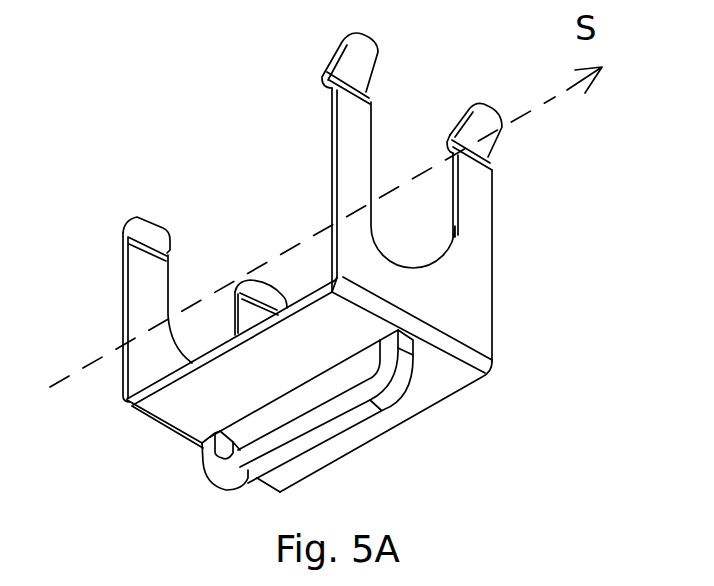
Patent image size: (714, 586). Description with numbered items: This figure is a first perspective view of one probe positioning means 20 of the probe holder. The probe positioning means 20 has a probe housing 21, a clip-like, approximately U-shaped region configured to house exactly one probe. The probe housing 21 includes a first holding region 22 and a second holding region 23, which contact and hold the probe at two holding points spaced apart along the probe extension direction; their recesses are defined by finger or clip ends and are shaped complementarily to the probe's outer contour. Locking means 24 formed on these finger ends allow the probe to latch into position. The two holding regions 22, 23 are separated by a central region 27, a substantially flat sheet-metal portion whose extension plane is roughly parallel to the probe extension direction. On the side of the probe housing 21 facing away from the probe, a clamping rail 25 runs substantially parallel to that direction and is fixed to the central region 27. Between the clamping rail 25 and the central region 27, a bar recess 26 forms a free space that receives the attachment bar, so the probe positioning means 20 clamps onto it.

The probe positioning means 20 is at (647, 254).
The probe housing 21 is at (482, 327).
The first holding region 22 is at (477, 210).
The second holding region 23 is at (142, 283).
The locking means 24 is at (323, 72).
The clamping rail 25 is at (362, 413).
The bar recess 26 is at (247, 438).
The central region 27 is at (170, 408).